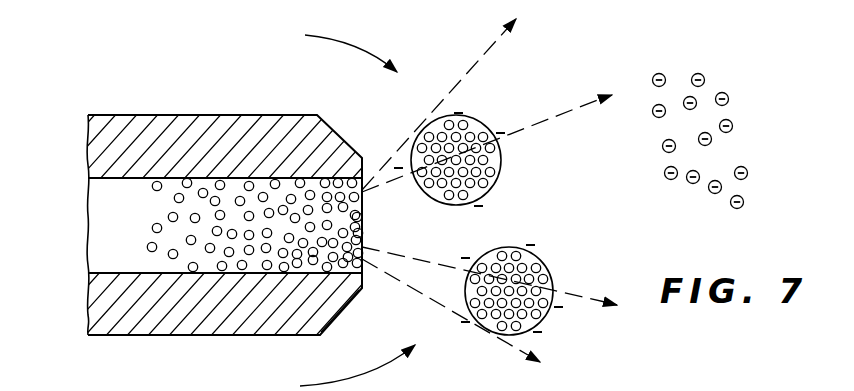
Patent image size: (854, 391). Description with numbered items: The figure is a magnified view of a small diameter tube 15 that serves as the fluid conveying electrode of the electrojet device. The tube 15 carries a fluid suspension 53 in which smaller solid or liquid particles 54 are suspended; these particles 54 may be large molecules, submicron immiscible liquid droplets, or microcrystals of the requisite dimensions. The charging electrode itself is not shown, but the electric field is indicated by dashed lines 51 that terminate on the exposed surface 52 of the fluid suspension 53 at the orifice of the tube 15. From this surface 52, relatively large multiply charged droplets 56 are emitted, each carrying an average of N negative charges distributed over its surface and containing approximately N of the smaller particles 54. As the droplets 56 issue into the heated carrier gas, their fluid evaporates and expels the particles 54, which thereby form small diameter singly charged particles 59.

The small diameter tube 15 is at (265, 125).
The electric field lines 51 is at (484, 55).
The exposed surface 52 is at (362, 265).
The fluid suspension 53 is at (95, 270).
The particles 54 is at (176, 200).
The multiply charged droplets 56 is at (502, 153).
The singly charged particles 59 is at (719, 126).